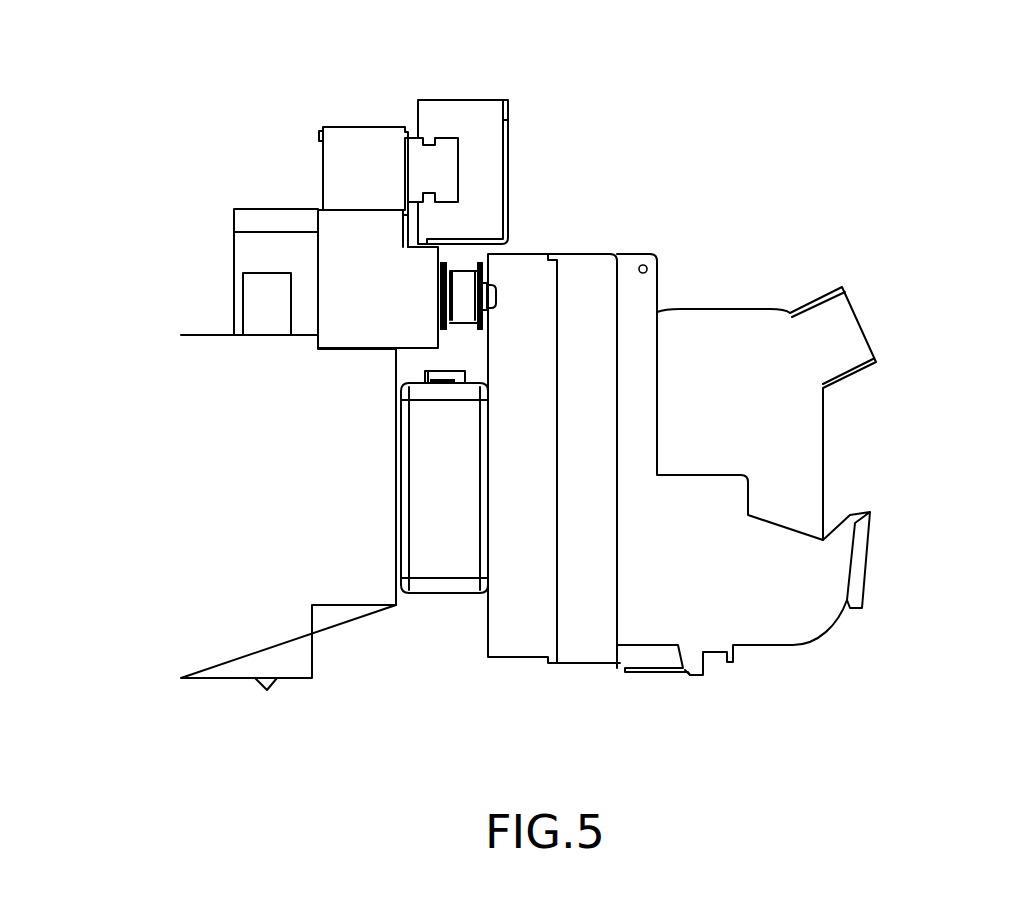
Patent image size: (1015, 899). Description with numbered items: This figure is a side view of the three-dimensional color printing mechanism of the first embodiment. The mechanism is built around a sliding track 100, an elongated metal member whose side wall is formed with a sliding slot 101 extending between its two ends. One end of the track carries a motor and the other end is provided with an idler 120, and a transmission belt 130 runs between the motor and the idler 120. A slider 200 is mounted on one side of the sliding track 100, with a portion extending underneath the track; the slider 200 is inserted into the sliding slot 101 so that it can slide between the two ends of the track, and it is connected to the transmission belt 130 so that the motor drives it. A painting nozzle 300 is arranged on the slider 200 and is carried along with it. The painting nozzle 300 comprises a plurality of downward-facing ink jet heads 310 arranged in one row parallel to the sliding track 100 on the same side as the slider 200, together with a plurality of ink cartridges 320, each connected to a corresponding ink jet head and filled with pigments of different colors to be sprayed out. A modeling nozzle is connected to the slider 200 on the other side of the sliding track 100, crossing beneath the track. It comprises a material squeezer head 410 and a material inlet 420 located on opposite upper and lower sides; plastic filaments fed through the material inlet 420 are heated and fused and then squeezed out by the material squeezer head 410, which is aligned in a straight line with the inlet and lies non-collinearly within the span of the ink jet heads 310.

The sliding track 100 is at (370, 122).
The sliding slot 101 is at (433, 145).
The slider 200 is at (480, 115).
The transmission belt 130 is at (461, 272).
The idler 120 is at (477, 277).
The painting nozzle 300 is at (168, 493).
The ink jet heads 310 is at (658, 673).
The ink cartridges 320 is at (739, 328).
The material squeezer head 410 is at (262, 680).
The material inlet 420 is at (262, 307).